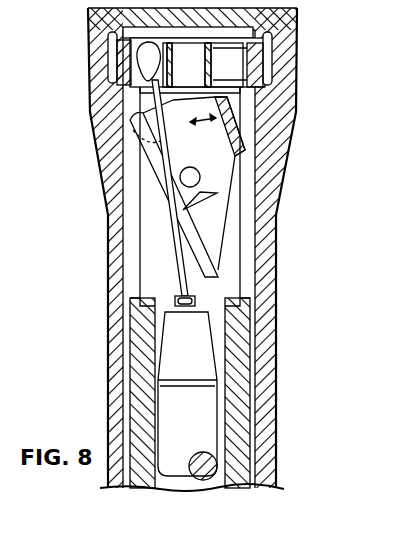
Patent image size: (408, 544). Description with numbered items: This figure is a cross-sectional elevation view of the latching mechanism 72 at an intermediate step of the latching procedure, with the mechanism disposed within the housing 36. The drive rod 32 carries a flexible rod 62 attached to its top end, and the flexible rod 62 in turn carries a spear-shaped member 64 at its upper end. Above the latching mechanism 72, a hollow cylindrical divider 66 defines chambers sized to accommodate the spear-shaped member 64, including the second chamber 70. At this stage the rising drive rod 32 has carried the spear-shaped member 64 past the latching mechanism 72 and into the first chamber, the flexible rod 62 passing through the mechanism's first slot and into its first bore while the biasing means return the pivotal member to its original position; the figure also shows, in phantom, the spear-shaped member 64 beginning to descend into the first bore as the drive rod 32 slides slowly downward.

The drive rod 32 is at (197, 429).
The housing 36 is at (266, 397).
The flexible rod 62 is at (181, 266).
The spear-shaped member 64 is at (147, 59).
The hollow cylindrical divider 66 is at (210, 67).
The second chamber 70 is at (199, 73).
The latching mechanism 72 is at (244, 200).